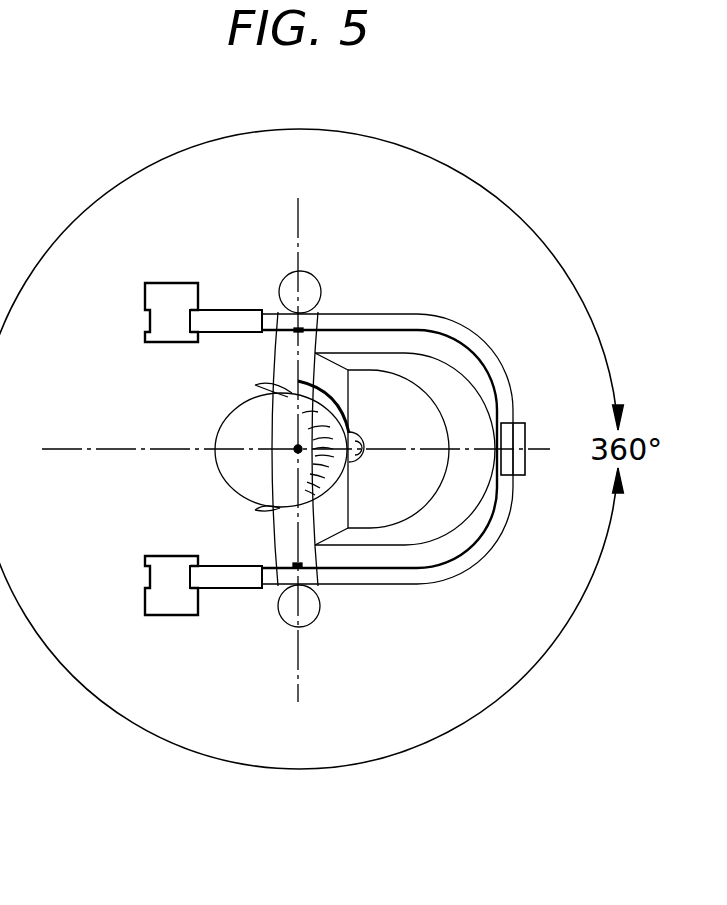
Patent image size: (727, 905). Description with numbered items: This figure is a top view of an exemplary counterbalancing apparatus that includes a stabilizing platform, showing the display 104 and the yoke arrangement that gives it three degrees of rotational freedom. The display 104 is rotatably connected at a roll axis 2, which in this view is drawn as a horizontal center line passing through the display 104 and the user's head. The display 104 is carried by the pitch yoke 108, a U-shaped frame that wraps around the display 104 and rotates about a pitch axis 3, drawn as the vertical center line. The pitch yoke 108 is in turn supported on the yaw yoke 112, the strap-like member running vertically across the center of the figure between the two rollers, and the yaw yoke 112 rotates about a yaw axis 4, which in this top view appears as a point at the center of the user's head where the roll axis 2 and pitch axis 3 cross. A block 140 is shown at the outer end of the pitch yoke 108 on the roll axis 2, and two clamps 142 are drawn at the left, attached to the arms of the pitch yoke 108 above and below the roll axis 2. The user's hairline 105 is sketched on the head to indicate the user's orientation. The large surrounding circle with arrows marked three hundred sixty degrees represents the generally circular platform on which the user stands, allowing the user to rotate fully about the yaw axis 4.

The roll axis 2 is at (284, 448).
The pitch axis 3 is at (299, 431).
The yaw axis 4 is at (298, 449).
The display 104 is at (395, 397).
The patient hair line 105 is at (297, 382).
The pitch yoke 108 is at (378, 578).
The yaw yoke 112 is at (280, 530).
The locking block 140 is at (521, 428).
The clamp 142 is at (172, 293).